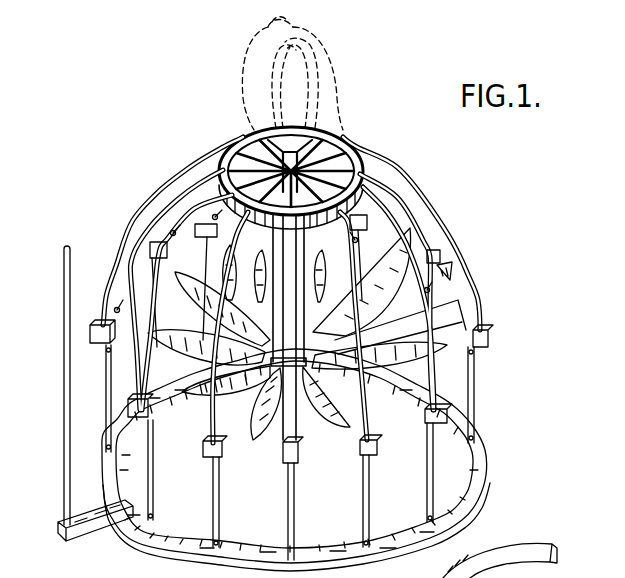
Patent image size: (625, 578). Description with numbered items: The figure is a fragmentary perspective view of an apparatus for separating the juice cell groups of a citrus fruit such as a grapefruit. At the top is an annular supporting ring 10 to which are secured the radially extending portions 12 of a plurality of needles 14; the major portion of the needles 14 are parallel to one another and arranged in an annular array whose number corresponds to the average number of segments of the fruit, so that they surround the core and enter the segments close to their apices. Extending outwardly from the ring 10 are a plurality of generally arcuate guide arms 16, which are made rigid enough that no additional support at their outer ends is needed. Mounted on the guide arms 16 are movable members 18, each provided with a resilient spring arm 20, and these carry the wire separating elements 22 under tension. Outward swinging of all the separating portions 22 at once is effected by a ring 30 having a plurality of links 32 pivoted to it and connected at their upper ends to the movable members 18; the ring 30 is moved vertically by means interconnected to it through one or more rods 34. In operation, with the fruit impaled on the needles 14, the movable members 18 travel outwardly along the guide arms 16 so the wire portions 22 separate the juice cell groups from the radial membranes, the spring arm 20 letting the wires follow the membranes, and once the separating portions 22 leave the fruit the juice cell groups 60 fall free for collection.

The annular supporting ring 10 is at (332, 143).
The radially extending portions 12 is at (315, 130).
The needles 14 is at (257, 172).
The guide arms 16 is at (453, 243).
The movable members 18 is at (489, 338).
The resilient spring arm 20 is at (118, 315).
The separating elements 22 is at (452, 303).
The ring 30 is at (178, 535).
The links 32 is at (232, 497).
The rod 34 is at (63, 403).
The juice cell groups 60 is at (277, 418).